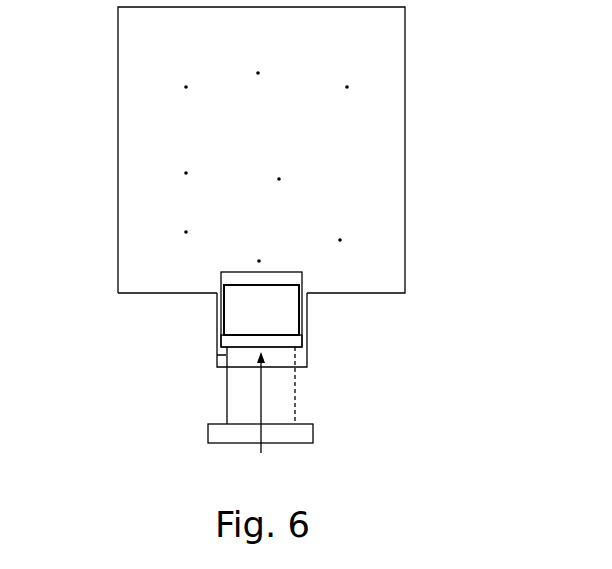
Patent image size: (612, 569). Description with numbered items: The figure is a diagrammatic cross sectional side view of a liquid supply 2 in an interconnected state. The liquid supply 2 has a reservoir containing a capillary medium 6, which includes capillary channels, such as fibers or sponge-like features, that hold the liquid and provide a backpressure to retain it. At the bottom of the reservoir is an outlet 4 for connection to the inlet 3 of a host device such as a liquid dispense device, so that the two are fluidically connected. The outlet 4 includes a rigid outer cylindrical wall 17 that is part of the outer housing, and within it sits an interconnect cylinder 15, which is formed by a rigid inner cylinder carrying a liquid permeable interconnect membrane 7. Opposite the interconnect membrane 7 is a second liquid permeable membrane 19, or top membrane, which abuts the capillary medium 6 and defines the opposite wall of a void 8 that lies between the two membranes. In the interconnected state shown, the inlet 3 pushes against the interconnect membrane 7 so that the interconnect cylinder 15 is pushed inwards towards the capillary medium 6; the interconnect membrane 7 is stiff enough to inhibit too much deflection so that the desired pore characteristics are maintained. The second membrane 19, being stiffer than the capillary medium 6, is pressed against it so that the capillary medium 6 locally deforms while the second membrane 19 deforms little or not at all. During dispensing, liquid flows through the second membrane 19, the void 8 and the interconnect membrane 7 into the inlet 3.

The liquid supply 2 is at (405, 164).
The capillary medium 6 is at (234, 164).
The second liquid permeable membrane 19 is at (222, 287).
The void 8 is at (245, 315).
The interconnect cylinder 15 is at (285, 319).
The interconnect membrane 7 is at (285, 340).
The rigid outer cylindrical wall 17 is at (217, 357).
The inlet 3 is at (227, 403).
The outlet 4 is at (285, 388).